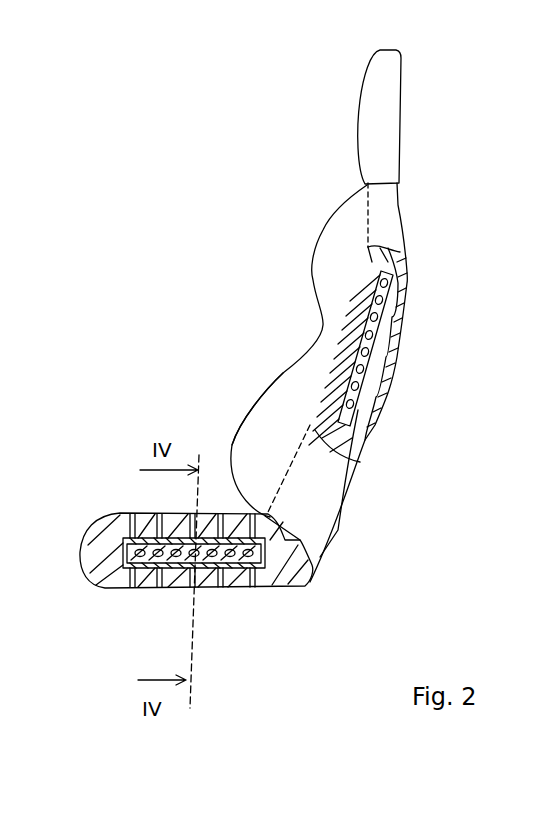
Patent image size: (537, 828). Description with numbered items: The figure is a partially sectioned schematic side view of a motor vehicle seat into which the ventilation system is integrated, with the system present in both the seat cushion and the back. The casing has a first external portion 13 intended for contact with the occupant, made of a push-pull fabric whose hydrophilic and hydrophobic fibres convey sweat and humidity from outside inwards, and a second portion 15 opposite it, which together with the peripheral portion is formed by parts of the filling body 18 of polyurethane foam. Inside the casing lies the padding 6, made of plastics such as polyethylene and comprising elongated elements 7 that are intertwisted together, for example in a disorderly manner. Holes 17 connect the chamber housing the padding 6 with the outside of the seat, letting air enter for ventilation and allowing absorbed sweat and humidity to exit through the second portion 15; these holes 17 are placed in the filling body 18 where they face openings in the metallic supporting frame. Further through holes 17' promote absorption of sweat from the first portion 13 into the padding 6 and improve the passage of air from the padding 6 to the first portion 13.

The padding 6 is at (372, 278).
The elements of elongated shape 7 is at (290, 383).
The first external portion 13 is at (135, 510).
The second portion 15 is at (400, 209).
The holes 17 is at (295, 457).
The through holes 17' is at (192, 480).
The filling body 18 is at (330, 480).